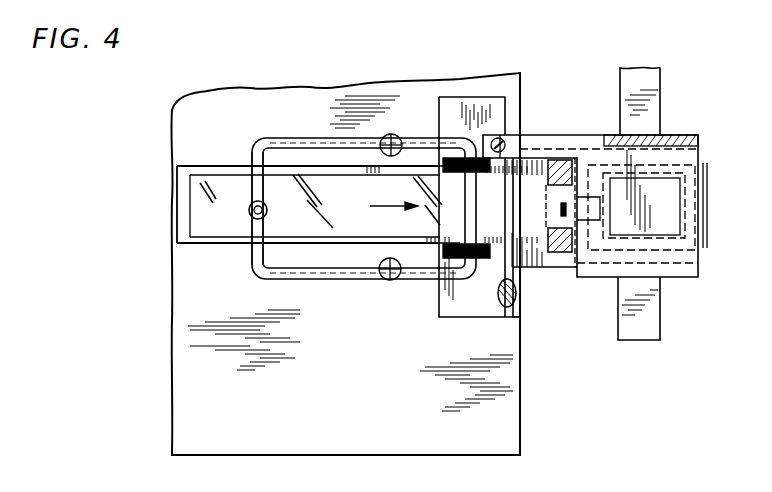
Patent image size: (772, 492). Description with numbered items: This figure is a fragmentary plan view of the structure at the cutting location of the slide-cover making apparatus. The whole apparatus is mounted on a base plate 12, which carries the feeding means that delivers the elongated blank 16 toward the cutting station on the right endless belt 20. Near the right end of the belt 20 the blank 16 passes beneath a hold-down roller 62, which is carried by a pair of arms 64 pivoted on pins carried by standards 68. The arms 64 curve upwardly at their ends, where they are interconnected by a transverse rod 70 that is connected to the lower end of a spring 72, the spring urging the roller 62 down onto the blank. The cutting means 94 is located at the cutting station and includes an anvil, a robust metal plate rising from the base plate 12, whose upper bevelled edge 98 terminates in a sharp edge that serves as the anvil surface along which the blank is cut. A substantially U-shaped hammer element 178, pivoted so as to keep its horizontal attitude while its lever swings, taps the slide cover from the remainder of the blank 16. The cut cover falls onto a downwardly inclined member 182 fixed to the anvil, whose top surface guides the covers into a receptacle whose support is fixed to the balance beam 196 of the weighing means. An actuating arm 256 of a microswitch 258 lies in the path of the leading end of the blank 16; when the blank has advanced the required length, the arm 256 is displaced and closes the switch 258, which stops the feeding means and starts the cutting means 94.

The base plate 12 is at (290, 407).
The elongated blank 16 is at (337, 202).
The right endless belt 20 is at (193, 246).
The hold-down roller 62 is at (460, 219).
The arms 64 is at (294, 139).
The standards 68 is at (392, 282).
The transverse rod 70 is at (253, 189).
The spring 72 is at (252, 212).
The cutting means 94 is at (516, 302).
The upper bevelled edge 98 is at (520, 313).
The hammer element 178 is at (552, 159).
The downwardly inclined member 182 is at (557, 260).
The balance beam 196 is at (658, 90).
The actuating arm 256 is at (559, 209).
The microswitch 258 is at (672, 223).